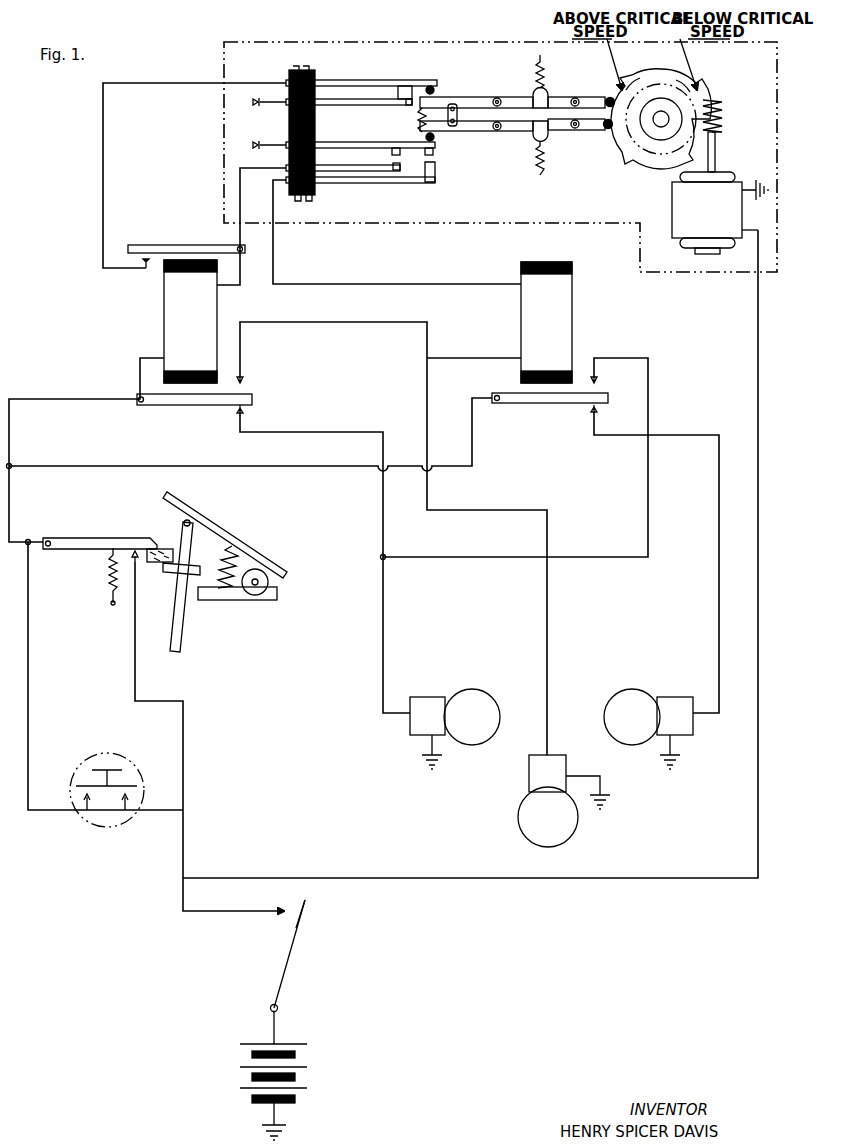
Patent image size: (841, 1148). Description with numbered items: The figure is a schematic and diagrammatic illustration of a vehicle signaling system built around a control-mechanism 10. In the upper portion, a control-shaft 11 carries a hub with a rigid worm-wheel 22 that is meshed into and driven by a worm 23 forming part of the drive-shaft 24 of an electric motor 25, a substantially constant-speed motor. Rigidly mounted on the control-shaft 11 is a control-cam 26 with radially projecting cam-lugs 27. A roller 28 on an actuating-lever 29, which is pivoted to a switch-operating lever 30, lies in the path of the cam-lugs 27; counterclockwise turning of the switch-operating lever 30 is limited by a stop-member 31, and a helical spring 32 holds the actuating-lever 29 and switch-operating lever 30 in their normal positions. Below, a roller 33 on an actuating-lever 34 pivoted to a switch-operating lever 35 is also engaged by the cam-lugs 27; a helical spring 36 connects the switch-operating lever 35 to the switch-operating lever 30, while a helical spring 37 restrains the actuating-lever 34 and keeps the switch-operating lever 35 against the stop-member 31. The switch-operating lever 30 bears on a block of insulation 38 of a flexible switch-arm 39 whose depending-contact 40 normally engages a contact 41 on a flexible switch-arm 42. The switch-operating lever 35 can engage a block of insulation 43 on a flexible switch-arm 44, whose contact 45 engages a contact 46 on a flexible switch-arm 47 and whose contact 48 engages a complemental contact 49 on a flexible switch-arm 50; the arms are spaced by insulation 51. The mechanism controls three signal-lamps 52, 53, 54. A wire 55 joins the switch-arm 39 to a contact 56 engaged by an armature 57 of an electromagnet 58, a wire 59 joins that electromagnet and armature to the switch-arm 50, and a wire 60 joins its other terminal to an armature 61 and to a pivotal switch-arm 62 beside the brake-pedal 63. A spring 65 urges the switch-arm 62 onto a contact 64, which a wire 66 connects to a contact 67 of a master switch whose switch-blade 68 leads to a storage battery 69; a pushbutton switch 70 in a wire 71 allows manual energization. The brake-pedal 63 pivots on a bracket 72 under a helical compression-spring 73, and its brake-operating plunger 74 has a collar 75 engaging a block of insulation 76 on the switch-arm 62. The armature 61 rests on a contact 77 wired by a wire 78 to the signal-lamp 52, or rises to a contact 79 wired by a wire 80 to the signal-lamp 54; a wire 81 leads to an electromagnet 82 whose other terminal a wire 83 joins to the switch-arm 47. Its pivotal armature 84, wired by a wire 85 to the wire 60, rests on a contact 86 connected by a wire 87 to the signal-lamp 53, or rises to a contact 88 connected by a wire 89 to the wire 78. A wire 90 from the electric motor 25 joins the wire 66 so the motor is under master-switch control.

The control-mechanism 10 is at (222, 43).
The control-shaft 11 is at (661, 123).
The worm-wheel 22 is at (660, 84).
The worm 23 is at (723, 114).
The drive-shaft 24 is at (716, 157).
The electric motor 25 is at (720, 213).
The control-cam 26 is at (626, 64).
The cam-lugs 27 is at (612, 168).
The roller 28 is at (610, 97).
The actuating-lever 29 is at (605, 101).
The switch-operating lever 30 is at (476, 93).
The stop-member 31 is at (463, 115).
The helical spring 32 is at (536, 70).
The roller 33 is at (607, 129).
The actuating-lever 34 is at (588, 131).
The switch-operating lever 35 is at (492, 131).
The helical spring 36 is at (418, 124).
The helical spring 37 is at (538, 165).
The block of insulation 38 is at (432, 86).
The flexible switch-arm 39 is at (372, 80).
The depending-contact 40 is at (398, 93).
The contact 41 is at (410, 105).
The flexible switch-arm 42 is at (355, 105).
The block of insulation 43 is at (434, 137).
The flexible switch-arm 44 is at (368, 142).
The contact 45 is at (434, 151).
The contact 46 is at (435, 175).
The flexible switch-arm 47 is at (388, 183).
The contact 48 is at (392, 152).
The complemental contact 49 is at (408, 165).
The flexible switch-arm 50 is at (358, 165).
The insulation 51 is at (289, 122).
The signal-lamp 52 is at (455, 729).
The signal-lamp 53 is at (648, 729).
The signal-lamp 54 is at (564, 801).
The wire 55 is at (103, 86).
The contact 56 is at (147, 273).
The armature 57 is at (190, 245).
The electromagnet 58 is at (190, 321).
The wire 59 is at (272, 172).
The wire 60 is at (140, 385).
The armature 61 is at (190, 405).
The pivotal switch-arm 62 is at (100, 538).
The brake-pedal 63 is at (232, 536).
The contact 64 is at (138, 563).
The spring 65 is at (109, 581).
The wire 66 is at (165, 704).
The contact 67 is at (285, 905).
The switch-blade 68 is at (292, 955).
The storage battery 69 is at (310, 1070).
The pushbutton switch 70 is at (80, 766).
The wire 71 is at (29, 665).
The bracket 72 is at (260, 600).
The helical compression-spring 73 is at (222, 557).
The brake-operating plunger 74 is at (180, 627).
The collar 75 is at (173, 576).
The block of insulation 76 is at (170, 548).
The contact 77 is at (243, 412).
The wire 78 is at (383, 432).
The contact 79 is at (243, 388).
The wire 80 is at (276, 322).
The wire 81 is at (474, 348).
The electromagnet 82 is at (546, 322).
The wire 83 is at (300, 284).
The pivotal armature 84 is at (548, 403).
The wire 85 is at (103, 466).
The contact 86 is at (598, 412).
The wire 87 is at (719, 457).
The contact 88 is at (598, 388).
The wire 89 is at (648, 410).
The wire 90 is at (758, 358).